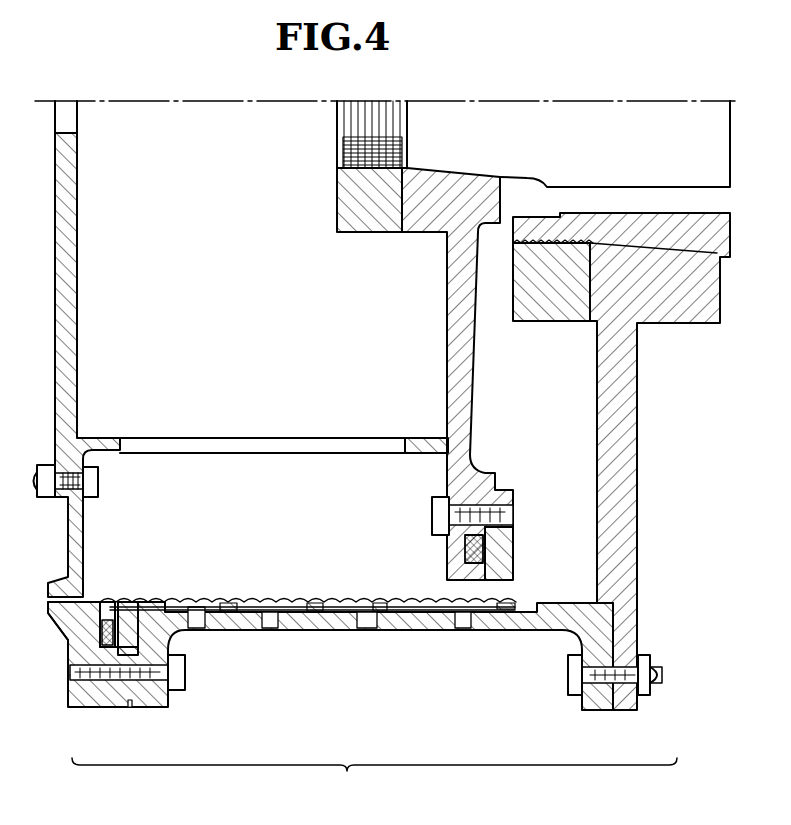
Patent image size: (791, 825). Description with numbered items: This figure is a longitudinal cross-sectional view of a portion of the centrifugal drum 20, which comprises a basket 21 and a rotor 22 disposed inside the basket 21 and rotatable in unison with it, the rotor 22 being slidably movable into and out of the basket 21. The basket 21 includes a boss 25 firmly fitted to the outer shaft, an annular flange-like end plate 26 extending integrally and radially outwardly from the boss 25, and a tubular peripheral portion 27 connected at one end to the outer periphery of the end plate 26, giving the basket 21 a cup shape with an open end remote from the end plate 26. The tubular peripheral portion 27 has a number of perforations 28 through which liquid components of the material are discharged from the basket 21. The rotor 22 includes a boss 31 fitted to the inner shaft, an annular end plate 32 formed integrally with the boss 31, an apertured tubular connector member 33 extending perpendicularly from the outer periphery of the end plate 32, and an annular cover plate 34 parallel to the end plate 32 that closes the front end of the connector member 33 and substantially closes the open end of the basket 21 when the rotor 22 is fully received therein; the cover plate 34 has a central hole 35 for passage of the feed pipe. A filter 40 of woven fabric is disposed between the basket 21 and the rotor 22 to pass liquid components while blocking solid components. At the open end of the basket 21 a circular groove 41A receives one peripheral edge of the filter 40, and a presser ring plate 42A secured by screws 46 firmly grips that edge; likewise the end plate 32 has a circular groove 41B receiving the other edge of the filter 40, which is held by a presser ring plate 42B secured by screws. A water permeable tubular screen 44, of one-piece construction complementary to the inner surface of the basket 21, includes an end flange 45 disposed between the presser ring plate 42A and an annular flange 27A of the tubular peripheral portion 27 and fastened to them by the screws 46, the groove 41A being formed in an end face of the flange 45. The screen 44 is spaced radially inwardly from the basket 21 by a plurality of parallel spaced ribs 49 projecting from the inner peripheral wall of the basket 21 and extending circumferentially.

The centrifugal drum 20 is at (374, 782).
The basket 21 is at (330, 656).
The rotor 22 is at (67, 349).
The boss 25 is at (673, 321).
The end plate 26 is at (621, 461).
The tubular peripheral portion 27 is at (330, 682).
The annular flange 27A is at (157, 707).
The perforations 28 is at (270, 631).
The boss 31 is at (428, 232).
The end plate 32 is at (465, 365).
The tubular connector member 33 is at (246, 438).
The cover plate 34 is at (65, 337).
The central hole 35 is at (58, 116).
The filter 40 is at (243, 603).
The circular groove 41A is at (115, 598).
The circular groove 41B is at (465, 562).
The presser ring plate 42A is at (82, 652).
The presser ring plate 42B is at (507, 539).
The tubular screen 44 is at (287, 603).
The end flange 45 is at (160, 613).
The screws 46 is at (185, 675).
The ribs 49 is at (318, 607).